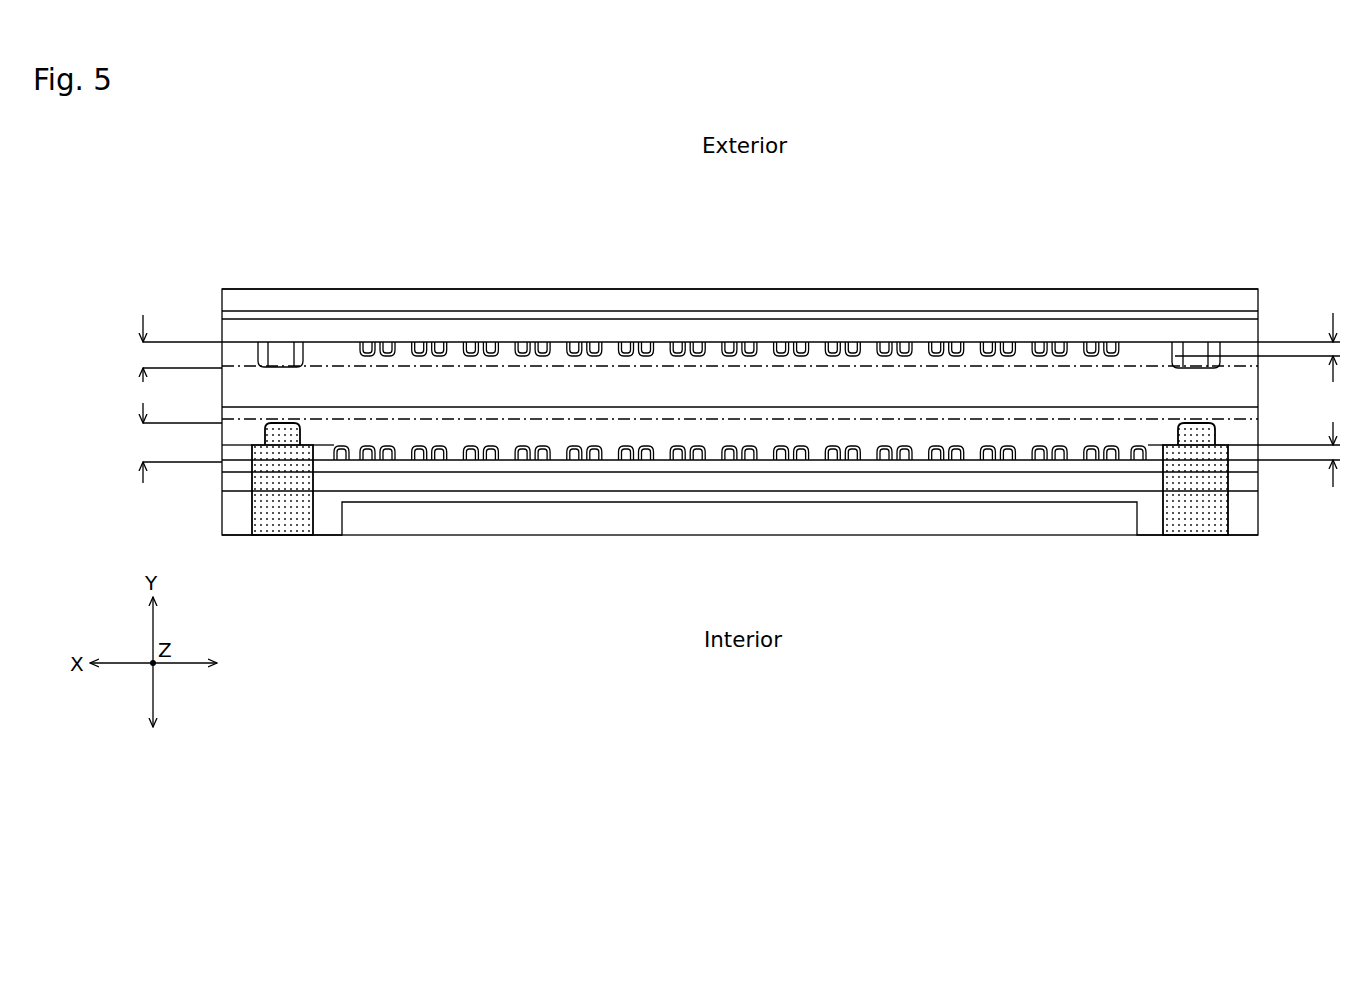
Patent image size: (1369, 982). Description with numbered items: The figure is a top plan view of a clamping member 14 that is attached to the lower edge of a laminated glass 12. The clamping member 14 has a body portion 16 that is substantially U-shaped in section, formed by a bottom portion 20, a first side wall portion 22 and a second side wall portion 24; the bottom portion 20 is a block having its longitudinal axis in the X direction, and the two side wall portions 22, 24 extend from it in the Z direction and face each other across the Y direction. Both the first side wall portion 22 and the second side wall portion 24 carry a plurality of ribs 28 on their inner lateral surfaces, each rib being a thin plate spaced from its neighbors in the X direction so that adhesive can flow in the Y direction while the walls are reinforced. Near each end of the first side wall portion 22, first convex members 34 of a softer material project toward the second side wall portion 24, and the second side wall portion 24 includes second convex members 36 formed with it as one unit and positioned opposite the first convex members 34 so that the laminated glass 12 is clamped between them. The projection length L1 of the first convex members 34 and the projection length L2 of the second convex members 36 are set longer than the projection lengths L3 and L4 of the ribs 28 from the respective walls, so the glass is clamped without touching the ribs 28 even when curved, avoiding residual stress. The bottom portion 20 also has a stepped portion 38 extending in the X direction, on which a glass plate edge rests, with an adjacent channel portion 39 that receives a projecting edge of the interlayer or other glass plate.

The laminated glass 12 is at (868, 420).
The clamping member 14 is at (1157, 236).
The body portion 16 is at (1064, 282).
The bottom portion 20 is at (663, 436).
The first side wall portion 22 is at (742, 487).
The second side wall portion 24 is at (740, 300).
The ribs 28 is at (461, 352).
The first convex members 34 is at (268, 546).
The second convex members 36 is at (281, 364).
The stepped portion 38 is at (222, 413).
The channel portion 39 is at (222, 388).
The projection length of first convex members L1 is at (166, 443).
The projection length of second convex members L2 is at (166, 348).
The projection length of ribs from first side wall portion L3 is at (1348, 454).
The projection length of ribs from second side wall portion L4 is at (1348, 347).